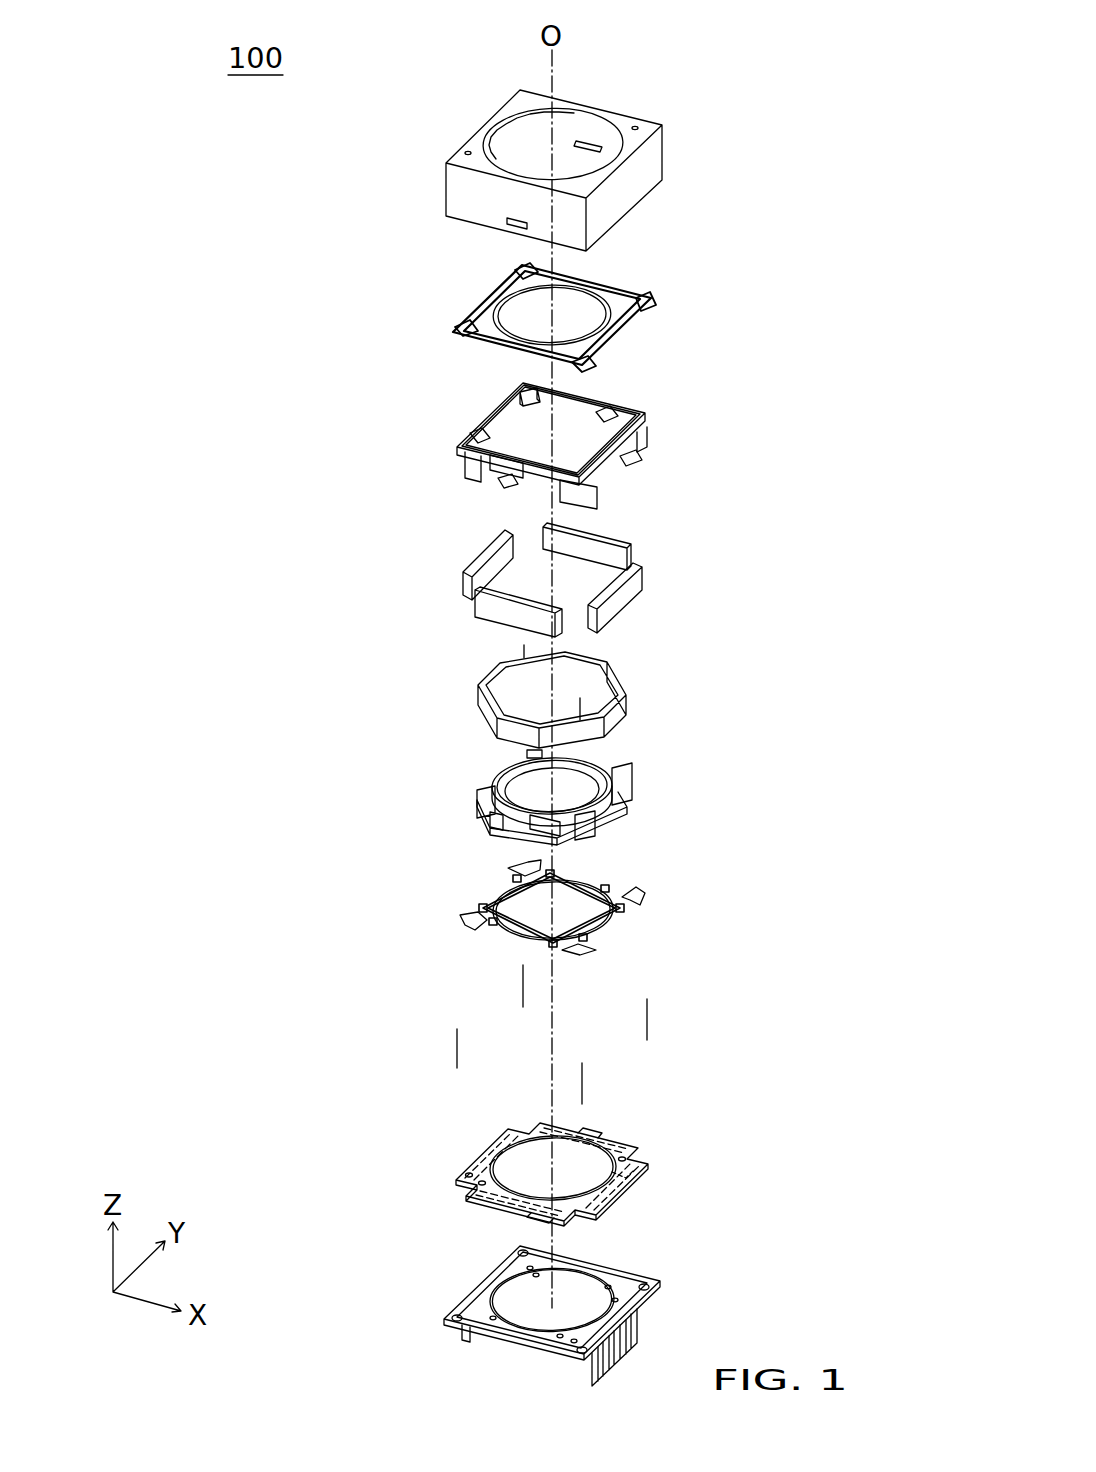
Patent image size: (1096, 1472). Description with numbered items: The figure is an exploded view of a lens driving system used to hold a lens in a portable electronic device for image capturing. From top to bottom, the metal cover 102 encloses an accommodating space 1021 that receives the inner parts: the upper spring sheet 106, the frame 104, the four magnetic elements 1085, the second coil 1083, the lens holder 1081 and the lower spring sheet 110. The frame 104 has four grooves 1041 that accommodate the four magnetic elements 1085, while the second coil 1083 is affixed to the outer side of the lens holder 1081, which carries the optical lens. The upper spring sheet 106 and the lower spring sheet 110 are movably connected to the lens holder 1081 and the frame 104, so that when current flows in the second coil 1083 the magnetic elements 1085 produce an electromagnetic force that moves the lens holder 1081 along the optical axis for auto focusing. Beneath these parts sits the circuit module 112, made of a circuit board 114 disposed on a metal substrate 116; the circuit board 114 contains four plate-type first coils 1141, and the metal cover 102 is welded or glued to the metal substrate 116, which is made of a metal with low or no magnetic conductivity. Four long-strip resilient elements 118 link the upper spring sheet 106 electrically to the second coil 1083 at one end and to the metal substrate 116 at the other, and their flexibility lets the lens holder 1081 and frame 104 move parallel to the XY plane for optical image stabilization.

The metal cover 102 is at (499, 147).
The accommodating space 1021 is at (520, 152).
The frame 104 is at (546, 433).
The grooves 1041 is at (490, 425).
The upper spring sheet 106 is at (467, 314).
The magnetic elements 1085 is at (463, 576).
The second coil 1083 is at (480, 700).
The lens holder 1081 is at (477, 796).
The lower spring sheet 110 is at (461, 916).
The resilient elements 118 is at (457, 1043).
The circuit module 112 is at (329, 1158).
The circuit board 114 is at (552, 1174).
The first coils 1141 is at (622, 1184).
The metal substrate 116 is at (458, 1309).